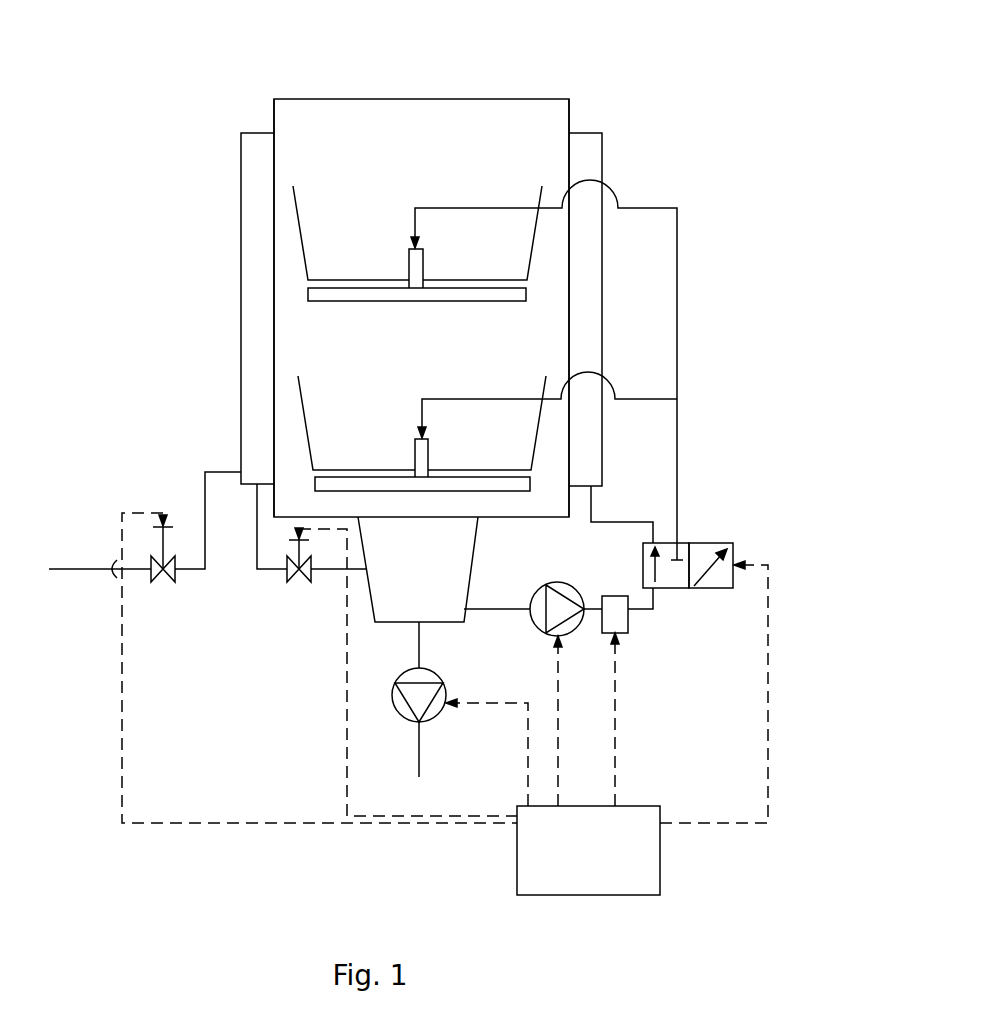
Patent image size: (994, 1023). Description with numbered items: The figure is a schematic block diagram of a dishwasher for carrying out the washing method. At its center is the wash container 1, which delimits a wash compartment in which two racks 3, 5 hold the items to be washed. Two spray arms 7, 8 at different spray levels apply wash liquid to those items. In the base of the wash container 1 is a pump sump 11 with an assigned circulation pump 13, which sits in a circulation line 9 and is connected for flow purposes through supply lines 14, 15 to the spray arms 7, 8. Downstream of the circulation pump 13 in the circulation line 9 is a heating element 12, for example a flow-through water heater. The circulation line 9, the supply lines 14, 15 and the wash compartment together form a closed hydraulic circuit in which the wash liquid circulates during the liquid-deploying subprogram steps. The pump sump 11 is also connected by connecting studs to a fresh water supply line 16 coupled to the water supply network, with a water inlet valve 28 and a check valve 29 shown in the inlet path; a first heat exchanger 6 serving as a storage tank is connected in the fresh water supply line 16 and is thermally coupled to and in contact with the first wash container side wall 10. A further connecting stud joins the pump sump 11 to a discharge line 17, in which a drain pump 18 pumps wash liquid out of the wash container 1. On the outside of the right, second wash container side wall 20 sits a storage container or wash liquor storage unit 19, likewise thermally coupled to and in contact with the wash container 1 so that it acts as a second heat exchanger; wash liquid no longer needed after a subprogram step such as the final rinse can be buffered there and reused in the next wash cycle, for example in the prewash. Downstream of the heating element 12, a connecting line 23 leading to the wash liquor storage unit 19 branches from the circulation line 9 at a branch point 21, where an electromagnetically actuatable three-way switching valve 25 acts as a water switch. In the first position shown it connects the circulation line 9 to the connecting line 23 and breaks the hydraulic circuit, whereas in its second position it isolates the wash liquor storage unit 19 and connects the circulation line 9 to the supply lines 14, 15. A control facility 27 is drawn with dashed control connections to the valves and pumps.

The wash container 1 is at (403, 99).
The rack 3 is at (297, 211).
The rack 5 is at (301, 394).
The first heat exchanger 6 is at (241, 197).
The spray arm 7 is at (380, 301).
The spray arm 8 is at (371, 485).
The circulation line 9 is at (490, 609).
The first wash container side wall 10 is at (274, 145).
The pump sump 11 is at (474, 541).
The heating element 12 is at (621, 633).
The circulation pump 13 is at (571, 634).
The supply line 14 is at (645, 208).
The supply line 15 is at (640, 399).
The fresh water supply line 16 is at (194, 569).
The discharge line 17 is at (420, 747).
The drain pump 18 is at (447, 692).
The wash liquor storage unit 19 is at (603, 143).
The second wash container side wall 20 is at (568, 118).
The branch point 21 is at (751, 521).
The connecting line 23 is at (632, 522).
The three-way switching valve 25 is at (733, 549).
The control facility 27 is at (588, 850).
The water inlet valve 28 is at (157, 583).
The check valve 29 is at (305, 582).